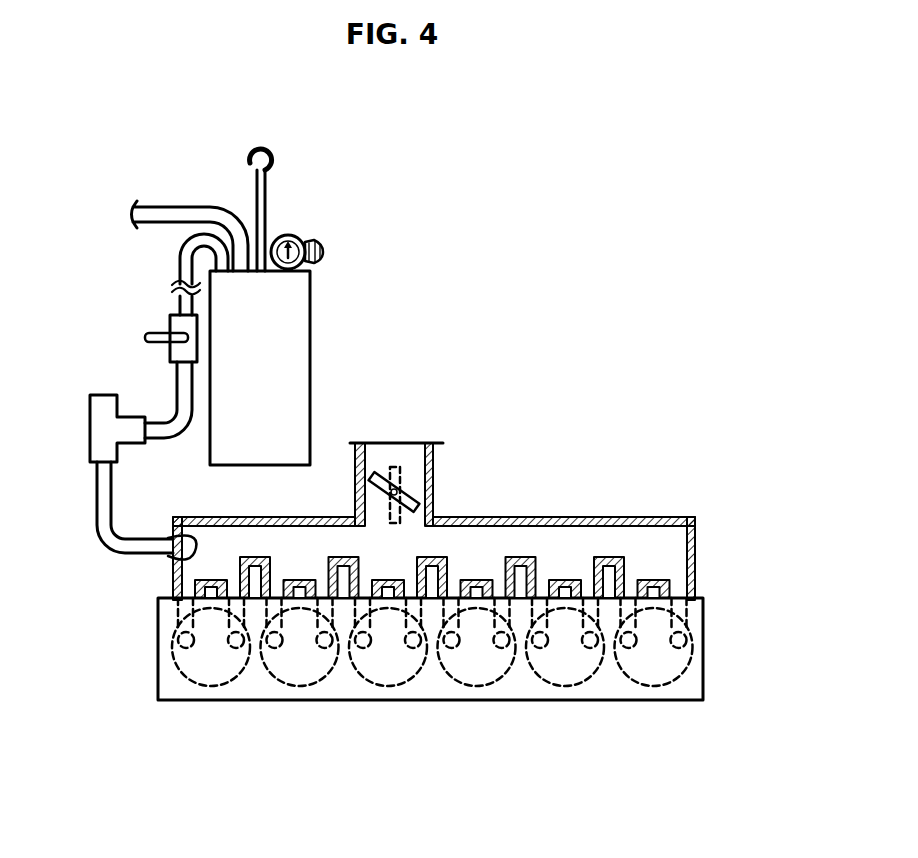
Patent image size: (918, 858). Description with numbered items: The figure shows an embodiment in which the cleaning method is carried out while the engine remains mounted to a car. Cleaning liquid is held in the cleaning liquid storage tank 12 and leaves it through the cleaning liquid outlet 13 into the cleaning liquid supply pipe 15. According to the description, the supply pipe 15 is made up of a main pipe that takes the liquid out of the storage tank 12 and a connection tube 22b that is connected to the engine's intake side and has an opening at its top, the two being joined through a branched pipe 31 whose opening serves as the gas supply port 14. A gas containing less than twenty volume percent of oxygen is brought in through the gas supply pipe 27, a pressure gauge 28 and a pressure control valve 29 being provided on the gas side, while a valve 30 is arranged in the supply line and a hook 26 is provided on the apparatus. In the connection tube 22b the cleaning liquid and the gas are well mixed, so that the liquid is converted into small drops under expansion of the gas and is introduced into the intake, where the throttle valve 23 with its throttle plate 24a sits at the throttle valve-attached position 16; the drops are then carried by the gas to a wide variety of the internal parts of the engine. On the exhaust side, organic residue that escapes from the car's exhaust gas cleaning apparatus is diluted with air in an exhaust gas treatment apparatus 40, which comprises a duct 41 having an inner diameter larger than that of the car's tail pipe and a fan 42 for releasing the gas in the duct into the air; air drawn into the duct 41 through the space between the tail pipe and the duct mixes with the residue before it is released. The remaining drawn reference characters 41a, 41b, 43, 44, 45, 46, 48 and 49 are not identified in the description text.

The cleaning liquid storage tank 12 is at (297, 340).
The cleaning liquid outlet 13 is at (175, 548).
The gas supply port 14 is at (105, 395).
The cleaning liquid supply pipe 15 is at (137, 388).
The throttle valve-attached position 16 is at (397, 467).
The connection tube 22b is at (97, 493).
The throttle valve 23 is at (433, 500).
The throttle plate 24a is at (428, 500).
The hook 26 is at (277, 155).
The gas supply pipe 27 is at (160, 207).
The pressure gauge 28 is at (292, 237).
The pressure control valve 29 is at (324, 252).
The valve 30 is at (170, 323).
The branched pipe 31 is at (97, 433).
The exhaust gas treatment apparatus 40 is at (156, 655).
The duct 41 is at (655, 688).
The nozzle 41a is at (632, 598).
The intake port 41b is at (627, 678).
The fan 42 is at (565, 688).
The third cylinder 43 is at (476, 688).
The fourth cylinder 44 is at (388, 688).
The fifth cylinder 45 is at (300, 688).
The sixth cylinder 46 is at (211, 688).
The intake manifold 48 is at (180, 565).
The manifold top wall 49 is at (615, 518).